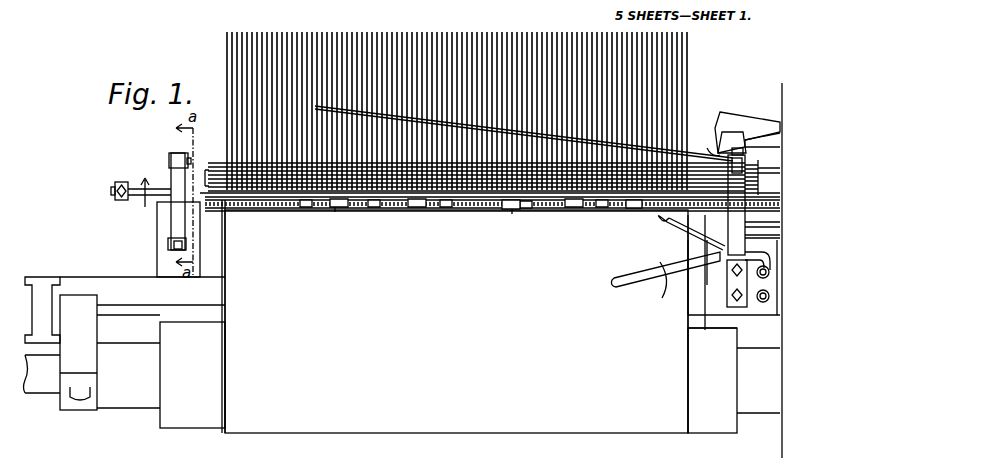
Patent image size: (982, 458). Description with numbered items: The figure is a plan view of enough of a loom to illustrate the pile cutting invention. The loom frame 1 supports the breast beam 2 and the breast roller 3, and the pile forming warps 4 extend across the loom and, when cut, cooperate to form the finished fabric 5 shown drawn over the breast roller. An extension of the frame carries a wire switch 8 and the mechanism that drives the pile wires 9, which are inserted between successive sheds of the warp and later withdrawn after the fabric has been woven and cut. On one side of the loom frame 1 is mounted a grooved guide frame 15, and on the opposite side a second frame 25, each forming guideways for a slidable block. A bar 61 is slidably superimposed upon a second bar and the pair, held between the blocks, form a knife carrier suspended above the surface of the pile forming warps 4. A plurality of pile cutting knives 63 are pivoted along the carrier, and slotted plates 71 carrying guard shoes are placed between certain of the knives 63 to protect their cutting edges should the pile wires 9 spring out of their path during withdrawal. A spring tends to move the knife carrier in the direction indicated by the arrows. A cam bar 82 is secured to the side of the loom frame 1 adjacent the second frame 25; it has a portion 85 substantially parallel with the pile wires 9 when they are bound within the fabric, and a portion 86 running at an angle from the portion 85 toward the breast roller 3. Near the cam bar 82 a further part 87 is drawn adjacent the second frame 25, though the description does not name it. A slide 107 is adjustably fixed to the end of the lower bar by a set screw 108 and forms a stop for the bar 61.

The loom frame 1 is at (42, 335).
The breast beam 2 is at (142, 343).
The breast roller 3 is at (192, 375).
The pile forming warps 4 is at (245, 53).
The finished fabric 5 is at (456, 321).
The wire switch 8 is at (524, 132).
The pile wires 9 is at (225, 165).
The guide frame 15 is at (177, 218).
The second frame 25 is at (743, 183).
The bar 61 is at (488, 211).
The pile cutting knives 63 is at (308, 210).
The plates 71 is at (414, 210).
The cam bar 82 is at (646, 274).
The portion of cam bar 85 is at (745, 252).
The portion of cam bar 86 is at (663, 289).
The hook rod 87 is at (678, 232).
The slide 107 is at (118, 181).
The set screw 108 is at (115, 193).